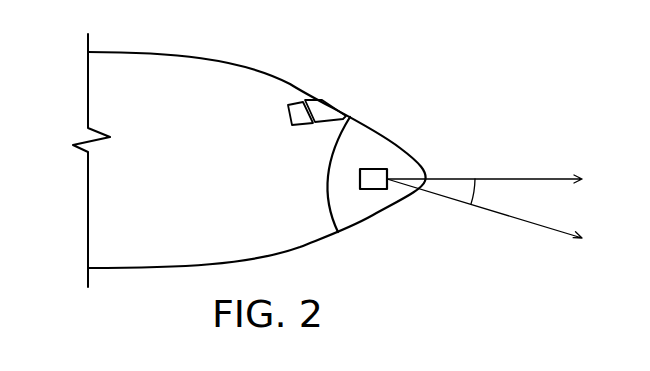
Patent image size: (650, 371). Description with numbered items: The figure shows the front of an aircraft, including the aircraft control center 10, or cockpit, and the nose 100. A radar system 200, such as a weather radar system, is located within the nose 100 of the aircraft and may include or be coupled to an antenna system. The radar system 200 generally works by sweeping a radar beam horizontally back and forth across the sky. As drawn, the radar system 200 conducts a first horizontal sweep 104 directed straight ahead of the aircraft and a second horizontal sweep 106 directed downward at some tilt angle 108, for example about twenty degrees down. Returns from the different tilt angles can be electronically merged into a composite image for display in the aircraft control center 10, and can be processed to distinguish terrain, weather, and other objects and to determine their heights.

The aircraft control center 10 is at (155, 70).
The nose 100 is at (370, 143).
The radar system 200 is at (375, 189).
The first horizontal sweep 104 is at (548, 178).
The second horizontal sweep 106 is at (517, 218).
The tilt angle 108 is at (478, 183).